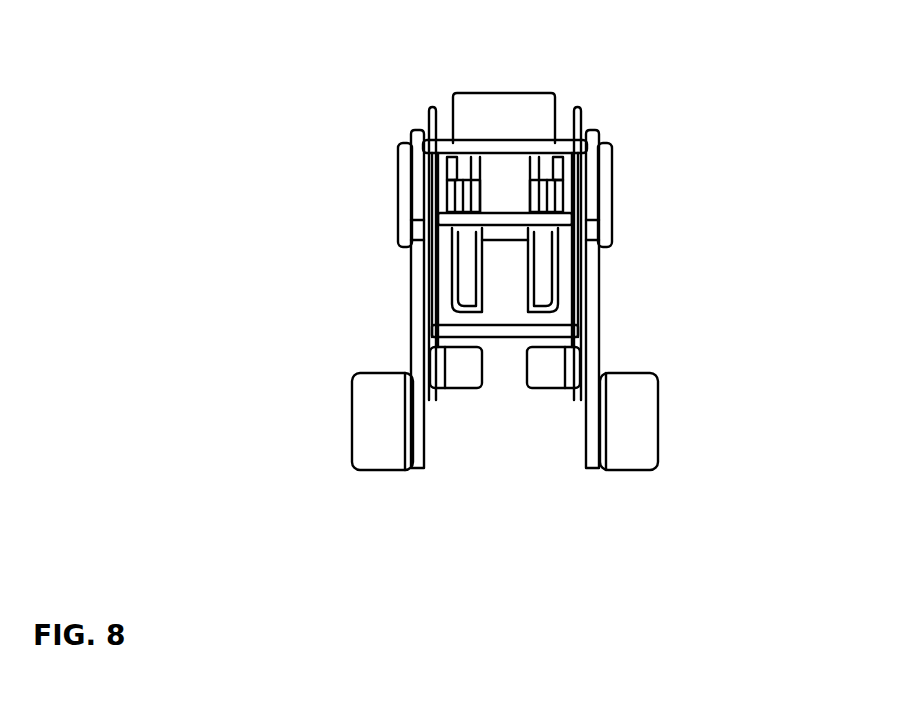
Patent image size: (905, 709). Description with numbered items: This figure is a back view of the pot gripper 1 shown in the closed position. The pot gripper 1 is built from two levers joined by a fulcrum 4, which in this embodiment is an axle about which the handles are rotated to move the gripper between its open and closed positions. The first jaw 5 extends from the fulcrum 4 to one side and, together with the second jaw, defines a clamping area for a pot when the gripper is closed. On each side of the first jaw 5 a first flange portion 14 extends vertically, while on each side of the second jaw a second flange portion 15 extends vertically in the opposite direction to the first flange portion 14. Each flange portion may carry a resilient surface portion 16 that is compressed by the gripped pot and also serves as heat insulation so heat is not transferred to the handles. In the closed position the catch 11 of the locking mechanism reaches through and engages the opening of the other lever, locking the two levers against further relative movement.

The pot gripper 1 is at (698, 172).
The fulcrum 4 is at (398, 186).
The first jaw 5 is at (405, 306).
The catch 11 is at (500, 110).
The first flange portion 14 is at (352, 428).
The second flange portion 15 is at (445, 390).
The resilient surface portion 16 is at (468, 363).